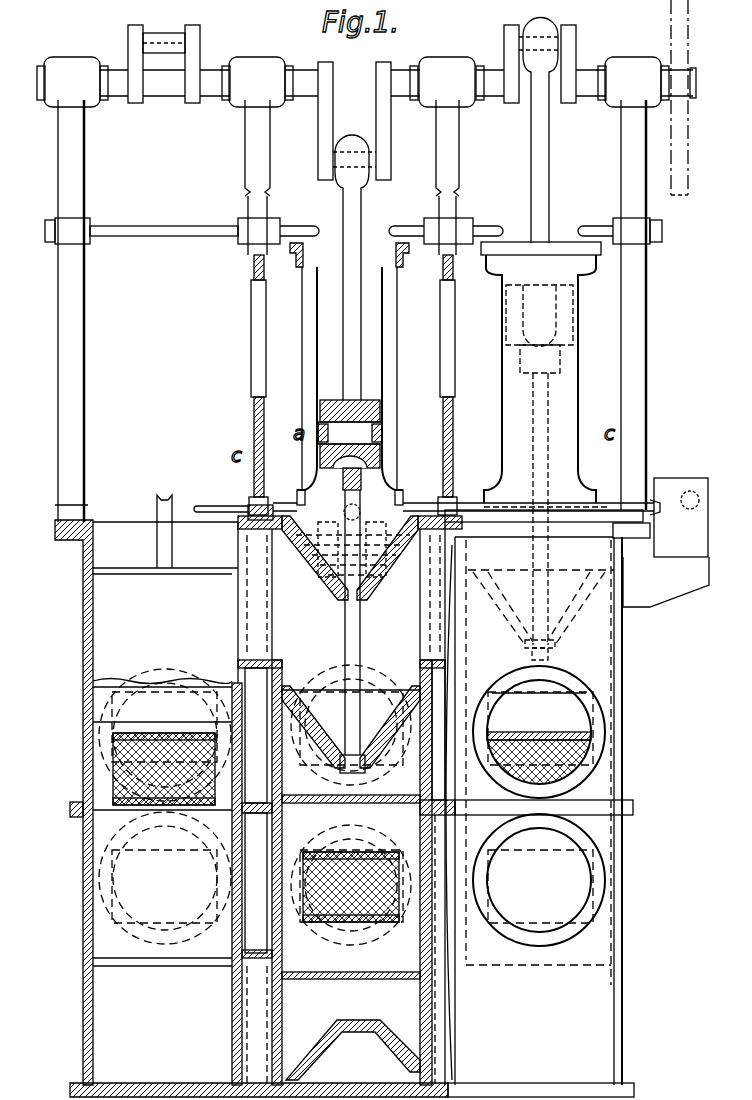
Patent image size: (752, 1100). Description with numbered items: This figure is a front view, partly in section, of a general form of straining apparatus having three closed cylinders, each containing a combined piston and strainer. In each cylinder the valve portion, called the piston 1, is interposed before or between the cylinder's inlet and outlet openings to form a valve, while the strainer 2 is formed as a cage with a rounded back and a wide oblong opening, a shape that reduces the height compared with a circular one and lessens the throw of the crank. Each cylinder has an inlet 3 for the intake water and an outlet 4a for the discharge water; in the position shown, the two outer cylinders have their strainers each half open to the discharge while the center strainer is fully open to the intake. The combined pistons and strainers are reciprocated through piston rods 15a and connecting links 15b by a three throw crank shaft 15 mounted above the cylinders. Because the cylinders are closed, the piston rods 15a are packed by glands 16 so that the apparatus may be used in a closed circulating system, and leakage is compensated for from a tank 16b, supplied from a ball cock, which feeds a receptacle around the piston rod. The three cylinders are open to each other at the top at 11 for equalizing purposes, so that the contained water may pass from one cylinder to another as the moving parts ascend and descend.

The piston 1 is at (352, 849).
The strainer 2 is at (113, 753).
The inlet 3 is at (103, 875).
The outlet 4a is at (147, 676).
The opening 11 is at (438, 1007).
The three throw crank shaft 15 is at (217, 88).
The piston rod 15a is at (583, 398).
The connecting link 15b is at (543, 155).
The gland 16 is at (224, 510).
The tank 16b is at (678, 487).